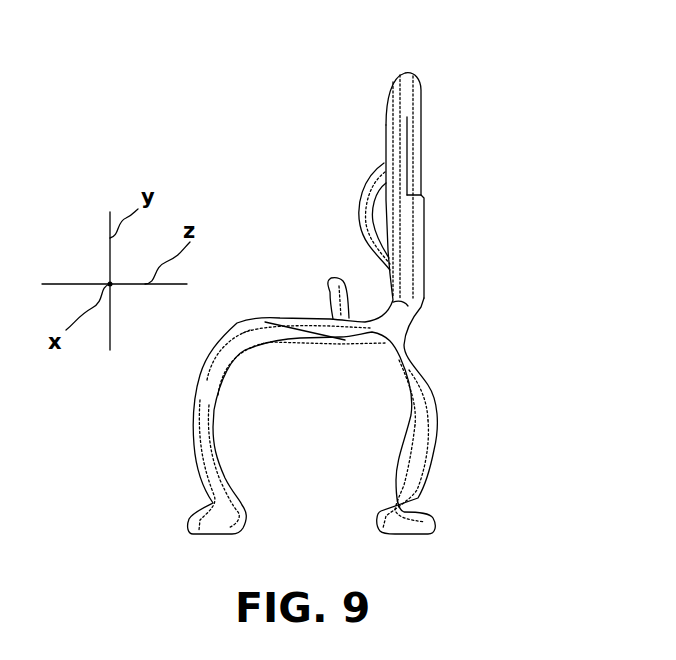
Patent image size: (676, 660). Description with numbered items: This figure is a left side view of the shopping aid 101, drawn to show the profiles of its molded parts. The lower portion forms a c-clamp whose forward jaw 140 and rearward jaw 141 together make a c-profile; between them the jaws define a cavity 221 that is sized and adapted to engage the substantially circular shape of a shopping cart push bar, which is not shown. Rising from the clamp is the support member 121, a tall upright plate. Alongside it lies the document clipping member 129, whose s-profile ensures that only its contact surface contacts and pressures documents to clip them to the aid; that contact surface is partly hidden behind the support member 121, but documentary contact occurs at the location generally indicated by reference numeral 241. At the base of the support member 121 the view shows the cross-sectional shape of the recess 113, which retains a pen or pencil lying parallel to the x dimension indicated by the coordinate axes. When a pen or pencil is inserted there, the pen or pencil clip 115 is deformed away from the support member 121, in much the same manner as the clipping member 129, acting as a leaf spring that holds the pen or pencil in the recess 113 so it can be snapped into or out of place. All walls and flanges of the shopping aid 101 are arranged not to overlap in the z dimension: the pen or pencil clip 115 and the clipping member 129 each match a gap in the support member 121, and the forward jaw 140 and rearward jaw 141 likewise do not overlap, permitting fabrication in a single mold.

The shopping aid 101 is at (324, 294).
The recess 113 is at (406, 303).
The pen or pencil clip 115 is at (333, 305).
The support member 121 is at (379, 185).
The clipping member 129 is at (367, 201).
The forward jaw 140 is at (218, 479).
The rearward jaw 141 is at (408, 485).
The cavity 221 is at (382, 397).
The location of documentary contact 241 is at (420, 122).